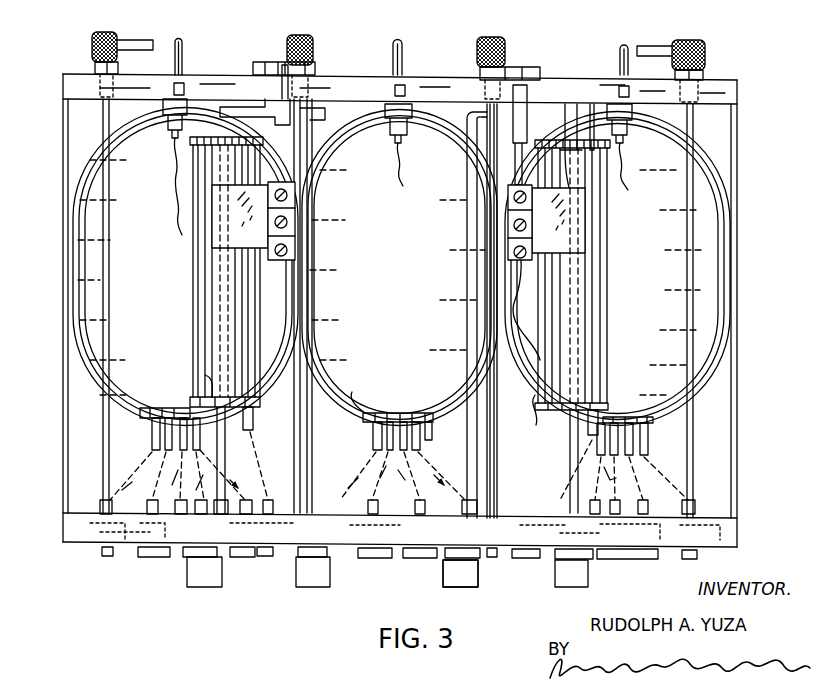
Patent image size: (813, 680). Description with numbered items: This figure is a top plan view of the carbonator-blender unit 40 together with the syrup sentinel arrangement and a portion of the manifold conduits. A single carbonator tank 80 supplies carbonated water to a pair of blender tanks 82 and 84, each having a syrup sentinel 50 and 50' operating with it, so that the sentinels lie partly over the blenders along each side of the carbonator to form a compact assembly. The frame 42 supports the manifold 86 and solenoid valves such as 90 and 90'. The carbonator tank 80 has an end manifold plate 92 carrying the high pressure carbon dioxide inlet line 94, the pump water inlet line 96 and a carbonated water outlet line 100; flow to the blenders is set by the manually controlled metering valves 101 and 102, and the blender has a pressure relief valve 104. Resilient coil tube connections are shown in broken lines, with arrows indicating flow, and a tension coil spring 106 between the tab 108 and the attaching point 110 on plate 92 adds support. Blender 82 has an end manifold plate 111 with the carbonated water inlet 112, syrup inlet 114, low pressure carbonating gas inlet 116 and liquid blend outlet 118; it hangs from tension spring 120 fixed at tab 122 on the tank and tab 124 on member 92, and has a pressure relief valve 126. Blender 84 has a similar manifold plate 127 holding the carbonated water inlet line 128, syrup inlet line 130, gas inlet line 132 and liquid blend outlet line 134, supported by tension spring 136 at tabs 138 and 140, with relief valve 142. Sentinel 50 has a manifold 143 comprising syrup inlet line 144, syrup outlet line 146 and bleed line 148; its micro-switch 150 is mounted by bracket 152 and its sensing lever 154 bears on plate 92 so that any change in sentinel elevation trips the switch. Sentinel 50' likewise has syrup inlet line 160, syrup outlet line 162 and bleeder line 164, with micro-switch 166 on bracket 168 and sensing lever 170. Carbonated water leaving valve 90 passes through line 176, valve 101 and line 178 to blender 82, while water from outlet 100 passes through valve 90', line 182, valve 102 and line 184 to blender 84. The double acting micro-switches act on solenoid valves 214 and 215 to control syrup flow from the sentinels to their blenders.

The carbonator-blender unit 40 is at (742, 240).
The frame 42 is at (727, 531).
The syrup sentinel 50 is at (206, 267).
The syrup sentinel 50' is at (594, 271).
The carbonator tank 80 is at (362, 138).
The blender tank 82 is at (75, 256).
The blender tank 84 is at (710, 278).
The manifold 86 is at (418, 566).
The solenoid valve 90 is at (340, 501).
The solenoid valve 90' is at (481, 577).
The end manifold plate 92 is at (722, 95).
The high pressure carbon dioxide inlet line 94 is at (396, 412).
The pump water inlet line 96 is at (405, 412).
The carbonated water outlet line 100 is at (420, 445).
The metering valve 101 is at (312, 48).
The metering valve 102 is at (508, 34).
The pressure relief valve 104 is at (386, 103).
The tension coil spring 106 is at (468, 113).
The tab 108 is at (399, 162).
The attaching point 110 is at (403, 85).
The end manifold plate 111 is at (140, 411).
The carbonated water inlet 112 is at (165, 441).
The syrup inlet 114 is at (186, 408).
The low pressure carbonating gas inlet 116 is at (215, 432).
The liquid blend outlet 118 is at (152, 429).
The tension spring 120 is at (162, 108).
The tab 122 is at (178, 205).
The tab 124 is at (181, 85).
The pressure relief valve 126 is at (173, 88).
The manifold plate 127 is at (642, 417).
The carbonated water inlet line 128 is at (640, 452).
The syrup inlet line 130 is at (638, 482).
The low pressure carbonating gas inlet line 132 is at (534, 500).
The liquid blend outlet line 134 is at (646, 437).
The tension spring 136 is at (633, 116).
The tab 138 is at (623, 175).
The tab 140 is at (620, 86).
The relief valve 142 is at (588, 104).
The manifold 143 is at (256, 397).
The syrup inlet line 144 is at (205, 375).
The syrup outlet line 146 is at (228, 432).
The bleed line 148 is at (254, 424).
The micro-switch 150 is at (270, 224).
The bracket 152 is at (212, 248).
The sensing lever 154 is at (282, 64).
The syrup inlet line 160 is at (588, 395).
The syrup outlet line 162 is at (565, 436).
The bleeder line 164 is at (535, 395).
The micro-switch 166 is at (525, 227).
The bracket 168 is at (587, 242).
The sensing lever 170 is at (520, 85).
The line 176 is at (352, 392).
The line 178 is at (236, 106).
The line 182 is at (467, 436).
The line 184 is at (557, 104).
The solenoid valve 214 is at (187, 574).
The solenoid valve 215 is at (588, 577).